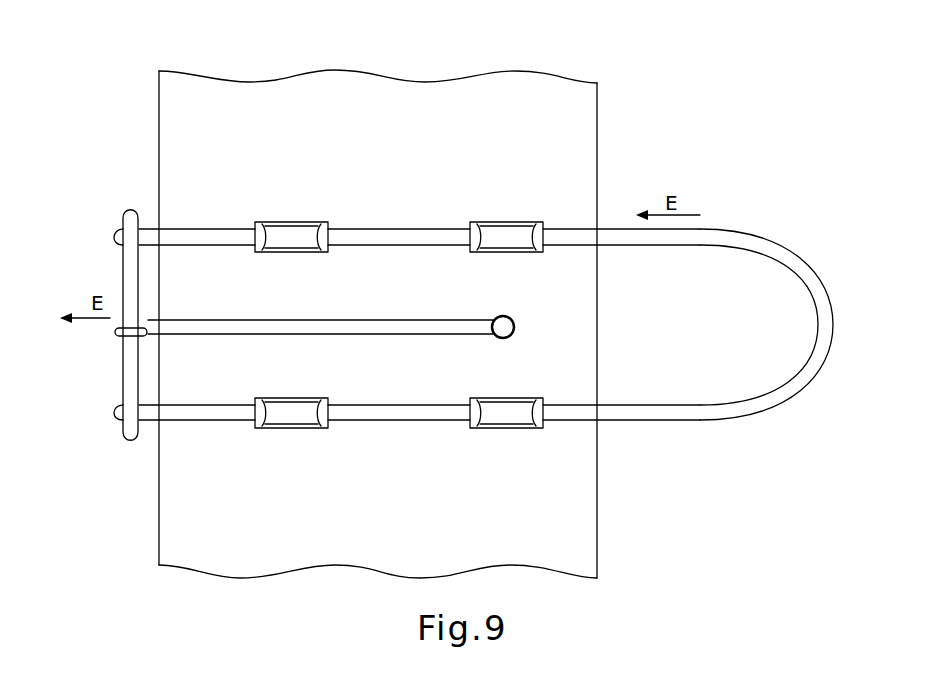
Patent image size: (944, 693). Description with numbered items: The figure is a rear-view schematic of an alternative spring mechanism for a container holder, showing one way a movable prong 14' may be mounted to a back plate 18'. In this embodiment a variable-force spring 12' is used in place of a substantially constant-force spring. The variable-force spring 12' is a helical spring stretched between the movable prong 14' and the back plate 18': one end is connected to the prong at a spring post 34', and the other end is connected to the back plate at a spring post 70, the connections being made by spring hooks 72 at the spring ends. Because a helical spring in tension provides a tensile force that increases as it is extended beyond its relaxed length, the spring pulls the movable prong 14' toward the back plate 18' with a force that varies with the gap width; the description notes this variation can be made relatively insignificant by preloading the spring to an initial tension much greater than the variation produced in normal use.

The back plate 18' is at (378, 310).
The movable prong 14' is at (463, 373).
The spring post 34' is at (99, 325).
The variable-force spring 12' is at (320, 302).
The spring post 70 is at (500, 316).
The spring hooks 72 is at (112, 333).